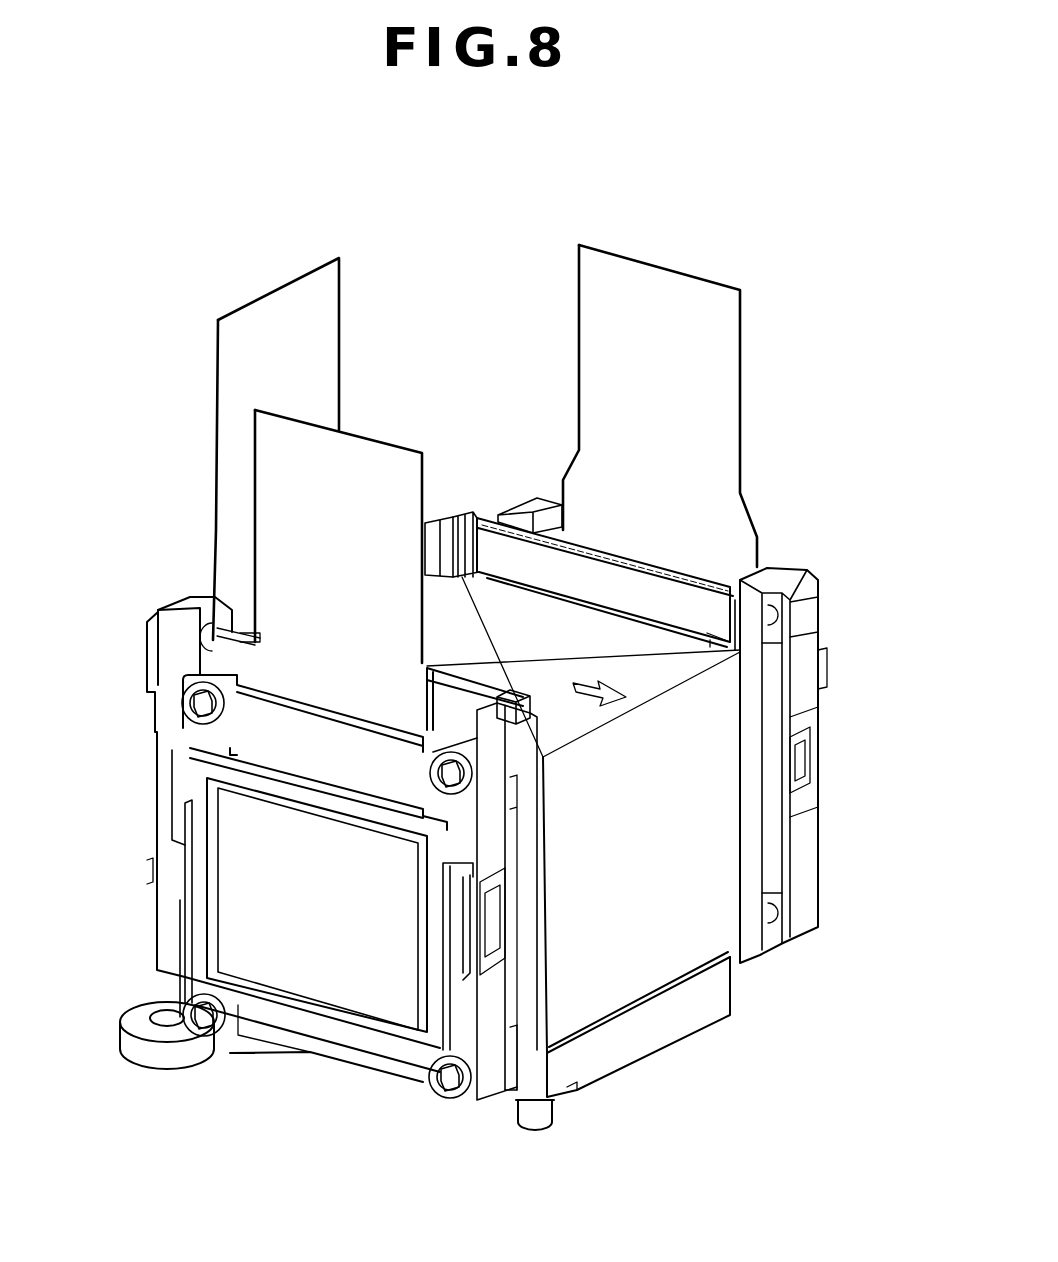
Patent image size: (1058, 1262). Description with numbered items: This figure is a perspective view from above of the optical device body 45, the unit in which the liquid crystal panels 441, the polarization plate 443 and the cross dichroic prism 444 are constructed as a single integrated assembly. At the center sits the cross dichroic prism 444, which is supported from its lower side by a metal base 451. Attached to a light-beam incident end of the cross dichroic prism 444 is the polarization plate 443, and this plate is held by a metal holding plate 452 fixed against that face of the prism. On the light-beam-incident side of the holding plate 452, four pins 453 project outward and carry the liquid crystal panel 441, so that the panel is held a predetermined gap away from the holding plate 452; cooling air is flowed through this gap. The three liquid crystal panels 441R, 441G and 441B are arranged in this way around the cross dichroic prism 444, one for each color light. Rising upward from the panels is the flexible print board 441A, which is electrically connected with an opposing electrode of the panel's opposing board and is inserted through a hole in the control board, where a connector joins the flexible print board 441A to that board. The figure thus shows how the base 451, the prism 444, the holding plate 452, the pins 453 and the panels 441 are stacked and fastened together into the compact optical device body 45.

The optical device body 45 is at (165, 382).
The flexible print board 441A is at (290, 345).
The liquid crystal panel 441 is at (461, 631).
The liquid crystal panel for green light 441G is at (230, 545).
The liquid crystal panel for blue light 441B is at (200, 595).
The liquid crystal panel for red light 441R is at (730, 523).
The polarization plate 443 is at (513, 845).
The cross dichroic prism 444 is at (700, 947).
The metal base 451 is at (660, 1033).
The metal holding plate 452 is at (440, 548).
The pin 453 is at (440, 780).